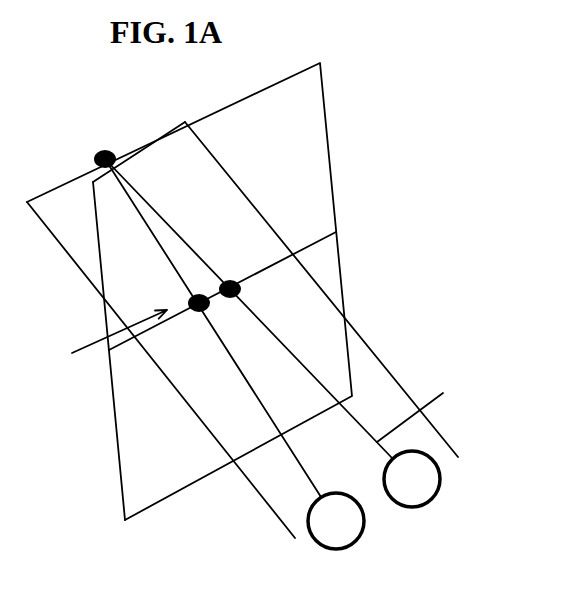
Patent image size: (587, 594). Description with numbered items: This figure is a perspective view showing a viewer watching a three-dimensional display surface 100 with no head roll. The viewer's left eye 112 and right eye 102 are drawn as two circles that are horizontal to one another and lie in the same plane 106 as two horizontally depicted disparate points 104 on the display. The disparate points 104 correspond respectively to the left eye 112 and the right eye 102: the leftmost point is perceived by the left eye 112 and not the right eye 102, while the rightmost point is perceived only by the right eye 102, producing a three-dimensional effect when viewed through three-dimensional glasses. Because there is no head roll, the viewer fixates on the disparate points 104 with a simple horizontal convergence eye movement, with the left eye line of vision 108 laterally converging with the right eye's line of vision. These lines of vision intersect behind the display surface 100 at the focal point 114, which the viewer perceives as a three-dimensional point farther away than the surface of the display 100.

The 3D display surface 100 is at (330, 165).
The right eye 102 is at (425, 505).
The disparate points 104 is at (105, 341).
The plane 106 is at (393, 393).
The left eye line of vision 108 is at (298, 467).
The left eye 112 is at (353, 543).
The focal point 114 is at (104, 148).